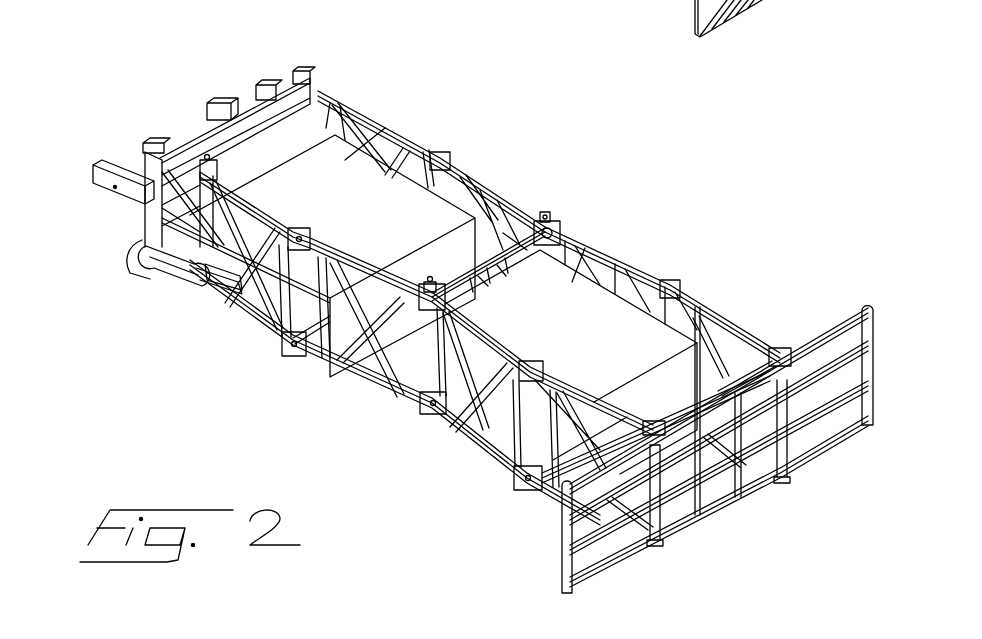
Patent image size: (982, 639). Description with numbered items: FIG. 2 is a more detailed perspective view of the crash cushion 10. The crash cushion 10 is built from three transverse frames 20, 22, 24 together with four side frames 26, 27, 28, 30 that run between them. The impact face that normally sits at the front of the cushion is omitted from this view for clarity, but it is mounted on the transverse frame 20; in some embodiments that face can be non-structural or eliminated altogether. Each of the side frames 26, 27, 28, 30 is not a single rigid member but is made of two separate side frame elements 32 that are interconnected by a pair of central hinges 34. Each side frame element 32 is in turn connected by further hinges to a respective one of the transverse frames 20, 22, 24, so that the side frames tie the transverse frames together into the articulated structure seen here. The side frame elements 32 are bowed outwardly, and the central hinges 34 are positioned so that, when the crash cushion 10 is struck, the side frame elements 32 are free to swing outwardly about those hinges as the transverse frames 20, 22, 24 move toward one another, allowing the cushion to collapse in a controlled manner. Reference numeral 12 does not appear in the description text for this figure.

The crash cushion 10 is at (433, 122).
The pivot joint 12 is at (563, 222).
The transverse frame 20 is at (740, 335).
The transverse frame 22 is at (540, 226).
The transverse frame 24 is at (283, 125).
The side frame 26 is at (492, 470).
The side frame 27 is at (643, 258).
The side frame 28 is at (263, 340).
The side frame 30 is at (382, 110).
The side frame element 32 is at (235, 298).
The central hinge 34 is at (600, 0).